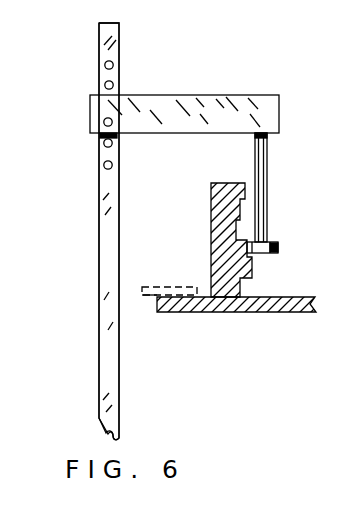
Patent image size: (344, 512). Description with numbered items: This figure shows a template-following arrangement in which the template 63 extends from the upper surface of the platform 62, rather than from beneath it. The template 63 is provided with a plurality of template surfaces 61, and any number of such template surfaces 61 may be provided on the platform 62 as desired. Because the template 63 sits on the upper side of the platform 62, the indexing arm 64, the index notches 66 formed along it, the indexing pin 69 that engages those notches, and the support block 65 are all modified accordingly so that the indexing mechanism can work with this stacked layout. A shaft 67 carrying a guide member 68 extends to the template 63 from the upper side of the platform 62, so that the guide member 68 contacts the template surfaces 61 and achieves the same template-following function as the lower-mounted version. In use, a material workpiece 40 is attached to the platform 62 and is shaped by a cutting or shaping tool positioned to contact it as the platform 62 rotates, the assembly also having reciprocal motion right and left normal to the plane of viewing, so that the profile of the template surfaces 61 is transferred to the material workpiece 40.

The material workpiece 40 is at (150, 297).
The template surfaces 61 is at (253, 270).
The platform 62 is at (263, 312).
The template 63 is at (210, 237).
The indexing arm 64 is at (99, 189).
The support block 65 is at (130, 110).
The index notches 66 is at (105, 65).
The shaft 67 is at (268, 200).
The guide member 68 is at (278, 248).
The indexing pin 69 is at (104, 122).